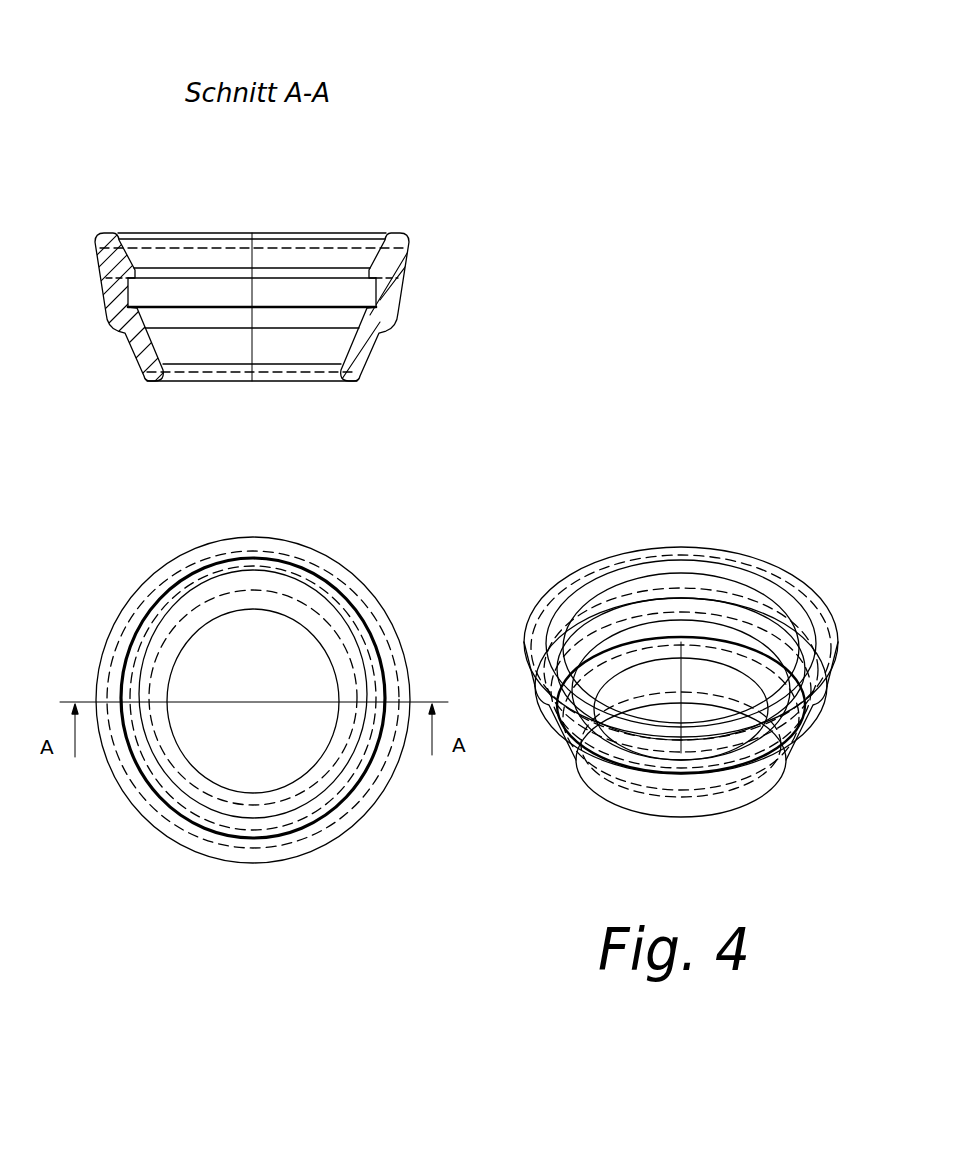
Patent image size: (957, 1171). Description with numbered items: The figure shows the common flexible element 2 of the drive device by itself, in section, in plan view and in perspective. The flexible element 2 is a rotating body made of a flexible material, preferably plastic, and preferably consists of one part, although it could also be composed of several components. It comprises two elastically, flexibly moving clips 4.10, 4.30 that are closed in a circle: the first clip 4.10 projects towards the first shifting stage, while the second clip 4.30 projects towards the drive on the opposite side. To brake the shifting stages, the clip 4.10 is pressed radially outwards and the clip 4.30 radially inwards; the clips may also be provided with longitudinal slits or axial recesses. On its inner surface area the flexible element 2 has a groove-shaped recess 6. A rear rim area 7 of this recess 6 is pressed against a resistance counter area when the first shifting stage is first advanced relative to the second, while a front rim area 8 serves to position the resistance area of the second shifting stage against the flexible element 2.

The flexible element 2 is at (440, 226).
The second clip 4.30 is at (392, 247).
The groove-shaped recess 6 is at (376, 294).
The first clip 4.10 is at (366, 360).
The front rim area 8 is at (107, 320).
The rear rim area 7 is at (128, 335).